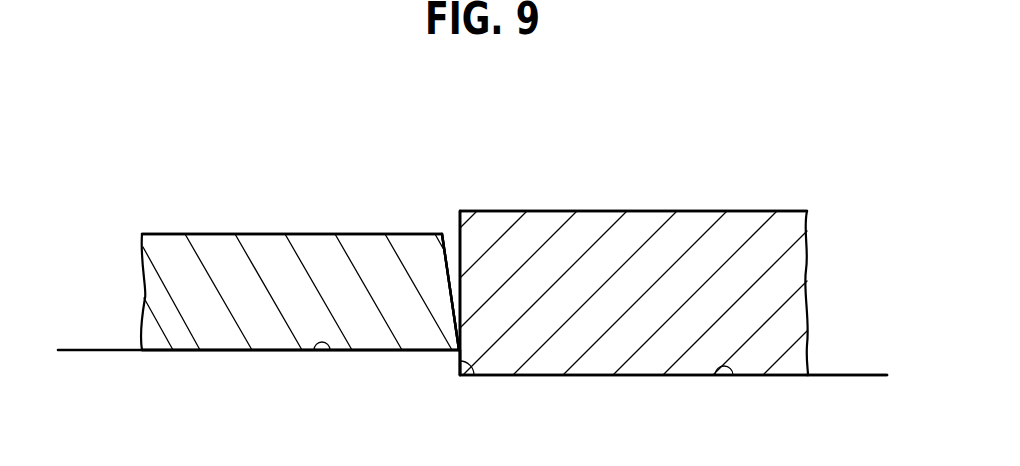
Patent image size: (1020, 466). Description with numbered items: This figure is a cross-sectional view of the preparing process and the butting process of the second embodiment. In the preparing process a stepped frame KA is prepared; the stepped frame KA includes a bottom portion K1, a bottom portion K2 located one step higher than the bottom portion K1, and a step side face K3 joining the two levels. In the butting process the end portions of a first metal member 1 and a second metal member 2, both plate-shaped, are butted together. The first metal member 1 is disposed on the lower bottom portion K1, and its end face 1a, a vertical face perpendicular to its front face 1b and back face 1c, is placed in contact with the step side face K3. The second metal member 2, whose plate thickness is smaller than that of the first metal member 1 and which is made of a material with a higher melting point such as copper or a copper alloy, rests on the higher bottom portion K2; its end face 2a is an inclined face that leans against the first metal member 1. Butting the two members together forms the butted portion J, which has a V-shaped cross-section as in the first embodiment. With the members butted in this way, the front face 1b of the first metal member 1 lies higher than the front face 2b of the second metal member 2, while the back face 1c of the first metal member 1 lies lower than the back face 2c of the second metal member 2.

The first metal member 1 is at (752, 170).
The end face of the first metal member 1a is at (459, 215).
The front face of the first metal member 1b is at (684, 210).
The back face of the first metal member 1c is at (622, 377).
The second metal member 2 is at (182, 195).
The end face of the second metal member 2a is at (447, 258).
The front face of the second metal member 2b is at (250, 233).
The back face of the second metal member 2c is at (227, 353).
The butted portion J is at (447, 196).
The bottom portion K1 is at (719, 377).
The bottom portion K2 is at (318, 352).
The step side face K3 is at (474, 375).
The stepped frame KA is at (846, 372).